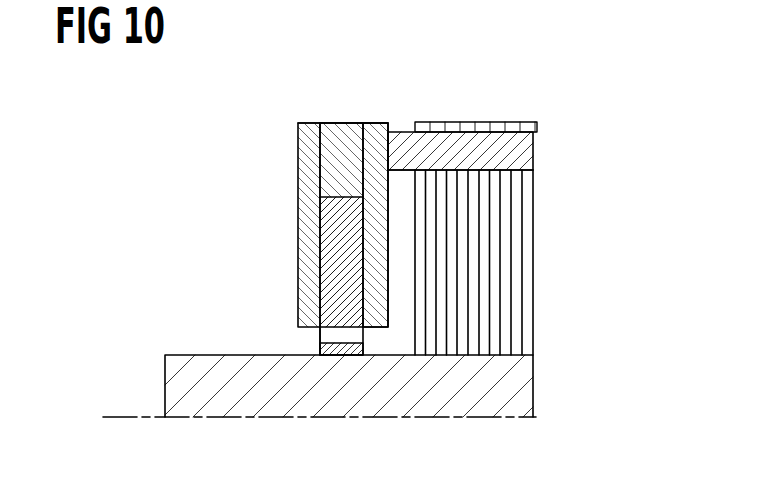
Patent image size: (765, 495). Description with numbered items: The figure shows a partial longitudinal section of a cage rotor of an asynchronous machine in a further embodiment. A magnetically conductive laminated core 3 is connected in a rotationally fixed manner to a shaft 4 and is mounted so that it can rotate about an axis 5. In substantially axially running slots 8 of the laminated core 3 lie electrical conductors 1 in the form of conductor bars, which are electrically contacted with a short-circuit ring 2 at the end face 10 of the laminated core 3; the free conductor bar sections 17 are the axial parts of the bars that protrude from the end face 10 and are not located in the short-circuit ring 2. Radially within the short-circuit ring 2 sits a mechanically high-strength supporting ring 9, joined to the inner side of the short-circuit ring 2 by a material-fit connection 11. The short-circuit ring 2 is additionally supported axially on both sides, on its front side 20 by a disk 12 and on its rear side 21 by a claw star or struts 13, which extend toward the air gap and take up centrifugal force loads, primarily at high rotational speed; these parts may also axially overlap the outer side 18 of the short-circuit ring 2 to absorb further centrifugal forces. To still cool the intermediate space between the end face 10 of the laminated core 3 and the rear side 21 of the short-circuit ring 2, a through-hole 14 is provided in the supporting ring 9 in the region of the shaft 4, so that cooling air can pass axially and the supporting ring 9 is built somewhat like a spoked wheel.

The electrical conductor 1 is at (405, 131).
The short-circuit ring 2 is at (302, 138).
The laminated core 3 is at (517, 245).
The shaft 4 is at (215, 372).
The axis 5 is at (118, 417).
The slot 8 is at (475, 122).
The supporting ring 9 is at (314, 263).
The end face 10 is at (412, 338).
The connection layer 11 is at (360, 228).
The disk 12 is at (307, 162).
The strut 13 is at (382, 123).
The through-hole 14 is at (330, 334).
The free conductor bar section 17 is at (415, 175).
The outer side 18 is at (340, 123).
The front side 20 is at (313, 123).
The rear side 21 is at (367, 272).